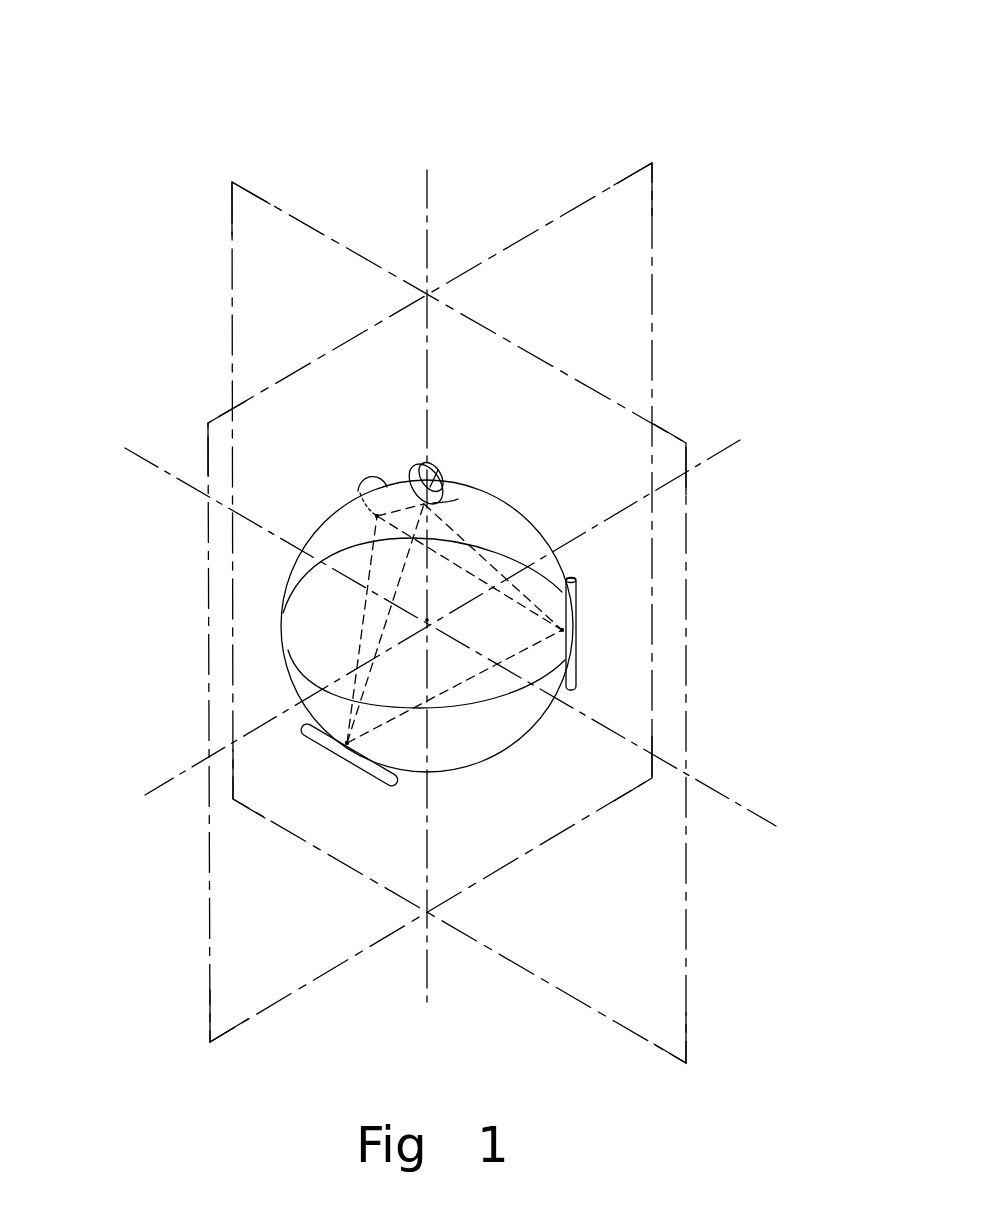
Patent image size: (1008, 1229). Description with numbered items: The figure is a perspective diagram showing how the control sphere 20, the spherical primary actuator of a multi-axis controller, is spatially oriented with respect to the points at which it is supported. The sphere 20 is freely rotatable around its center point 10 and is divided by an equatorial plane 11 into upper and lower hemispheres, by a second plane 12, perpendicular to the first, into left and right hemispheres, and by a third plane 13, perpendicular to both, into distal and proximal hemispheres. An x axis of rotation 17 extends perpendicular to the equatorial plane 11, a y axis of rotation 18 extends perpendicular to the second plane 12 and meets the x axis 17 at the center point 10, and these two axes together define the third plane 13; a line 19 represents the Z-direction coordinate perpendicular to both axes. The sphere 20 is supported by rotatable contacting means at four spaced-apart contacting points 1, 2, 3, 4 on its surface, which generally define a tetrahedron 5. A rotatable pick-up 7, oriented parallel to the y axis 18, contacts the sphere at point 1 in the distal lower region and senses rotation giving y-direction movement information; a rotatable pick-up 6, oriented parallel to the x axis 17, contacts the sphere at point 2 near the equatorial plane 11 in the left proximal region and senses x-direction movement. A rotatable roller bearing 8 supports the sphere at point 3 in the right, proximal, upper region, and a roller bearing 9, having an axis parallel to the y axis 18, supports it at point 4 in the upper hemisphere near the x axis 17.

The first contacting point 1 is at (358, 745).
The second contacting point 2 is at (560, 630).
The third contacting point 3 is at (378, 519).
The fourth contacting point 4 is at (458, 499).
The tetrahedron 5 is at (460, 537).
The rotatable pick-up 6 is at (578, 610).
The rotatable pick-up 7 is at (327, 750).
The rotatable roller bearing 8 is at (358, 477).
The roller bearing 9 is at (440, 463).
The center point 10 is at (503, 582).
The equatorial plane 11 is at (483, 708).
The second plane 12 is at (658, 243).
The third plane 13 is at (295, 213).
The x axis of rotation 17 is at (428, 188).
The y axis of rotation 18 is at (163, 480).
The line 19 is at (727, 462).
The control sphere 20 is at (323, 512).